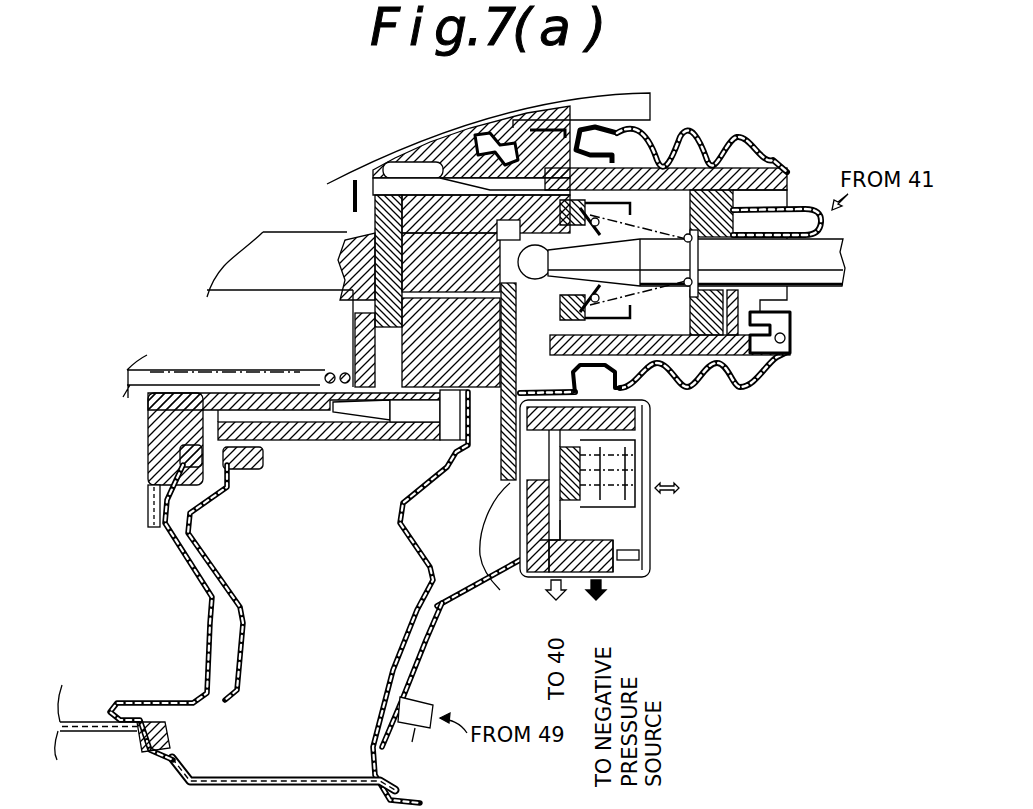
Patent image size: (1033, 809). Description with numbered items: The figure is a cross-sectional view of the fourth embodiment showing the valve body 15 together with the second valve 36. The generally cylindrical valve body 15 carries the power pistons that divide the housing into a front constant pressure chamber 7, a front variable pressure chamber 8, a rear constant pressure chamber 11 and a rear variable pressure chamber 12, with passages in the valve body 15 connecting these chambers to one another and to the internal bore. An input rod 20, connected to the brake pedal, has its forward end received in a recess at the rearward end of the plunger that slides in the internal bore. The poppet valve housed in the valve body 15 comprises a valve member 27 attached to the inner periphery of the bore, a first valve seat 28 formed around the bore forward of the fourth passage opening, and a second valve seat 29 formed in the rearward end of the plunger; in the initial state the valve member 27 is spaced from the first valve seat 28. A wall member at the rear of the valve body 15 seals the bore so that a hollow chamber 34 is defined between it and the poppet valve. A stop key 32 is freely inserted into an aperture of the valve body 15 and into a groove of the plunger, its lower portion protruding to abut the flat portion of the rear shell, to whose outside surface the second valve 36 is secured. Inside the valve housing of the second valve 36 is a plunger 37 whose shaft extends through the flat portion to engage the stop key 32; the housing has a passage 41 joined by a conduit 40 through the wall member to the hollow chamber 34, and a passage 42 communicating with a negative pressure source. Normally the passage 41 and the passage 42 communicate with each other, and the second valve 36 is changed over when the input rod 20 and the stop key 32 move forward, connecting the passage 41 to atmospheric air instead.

The front constant pressure chamber 7 is at (92, 707).
The front variable pressure chamber 8 is at (166, 760).
The rear constant pressure chamber 11 is at (403, 610).
The rear variable pressure chamber 12 is at (457, 573).
The valve body 15 is at (685, 172).
The input rod 20 is at (818, 277).
The valve member 27 is at (607, 180).
The first valve seat 28 is at (573, 210).
The second valve seat 29 is at (543, 225).
The stop key 32 is at (487, 560).
The hollow chamber 34 is at (720, 183).
The second valve 36 is at (657, 530).
The plunger 37 is at (633, 472).
The conduit 40 is at (806, 210).
The passage 41 is at (531, 560).
The passage 42 is at (630, 560).